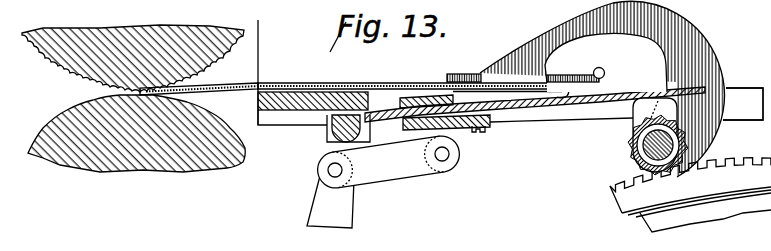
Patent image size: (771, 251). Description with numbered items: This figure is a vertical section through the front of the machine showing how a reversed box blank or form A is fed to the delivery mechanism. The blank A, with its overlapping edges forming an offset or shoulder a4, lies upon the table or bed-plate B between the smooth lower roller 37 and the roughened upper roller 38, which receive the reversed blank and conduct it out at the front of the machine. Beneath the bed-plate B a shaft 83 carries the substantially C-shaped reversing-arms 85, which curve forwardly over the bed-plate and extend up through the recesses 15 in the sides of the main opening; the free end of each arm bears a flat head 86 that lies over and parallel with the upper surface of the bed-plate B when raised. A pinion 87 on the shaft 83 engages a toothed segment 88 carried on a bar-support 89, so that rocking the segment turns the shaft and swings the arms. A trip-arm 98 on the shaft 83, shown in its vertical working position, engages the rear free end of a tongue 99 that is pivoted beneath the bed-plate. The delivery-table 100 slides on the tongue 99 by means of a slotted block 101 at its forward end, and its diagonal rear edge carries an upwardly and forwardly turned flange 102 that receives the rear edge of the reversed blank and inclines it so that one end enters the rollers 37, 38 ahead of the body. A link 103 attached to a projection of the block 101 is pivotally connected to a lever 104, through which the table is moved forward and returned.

The upper roller 38 is at (156, 28).
The lower roller 37 is at (72, 100).
The box blank or form A is at (367, 84).
The table or bed-plate B is at (290, 112).
The block 101 is at (401, 99).
The delivery-table 100 is at (492, 91).
The tongue 99 is at (387, 115).
The flange 102 is at (590, 108).
The link 103 is at (389, 162).
The lever 104 is at (330, 200).
The reversing-arms 85 is at (700, 30).
The flat head 86 is at (469, 73).
The trip-arm 98 is at (637, 105).
The pinion 87 is at (636, 133).
The shaft 83 is at (645, 145).
The recesses 15 is at (756, 104).
The toothed segment 88 is at (741, 167).
The bar-support 89 is at (745, 212).
The offset or shoulder a4 is at (523, 108).